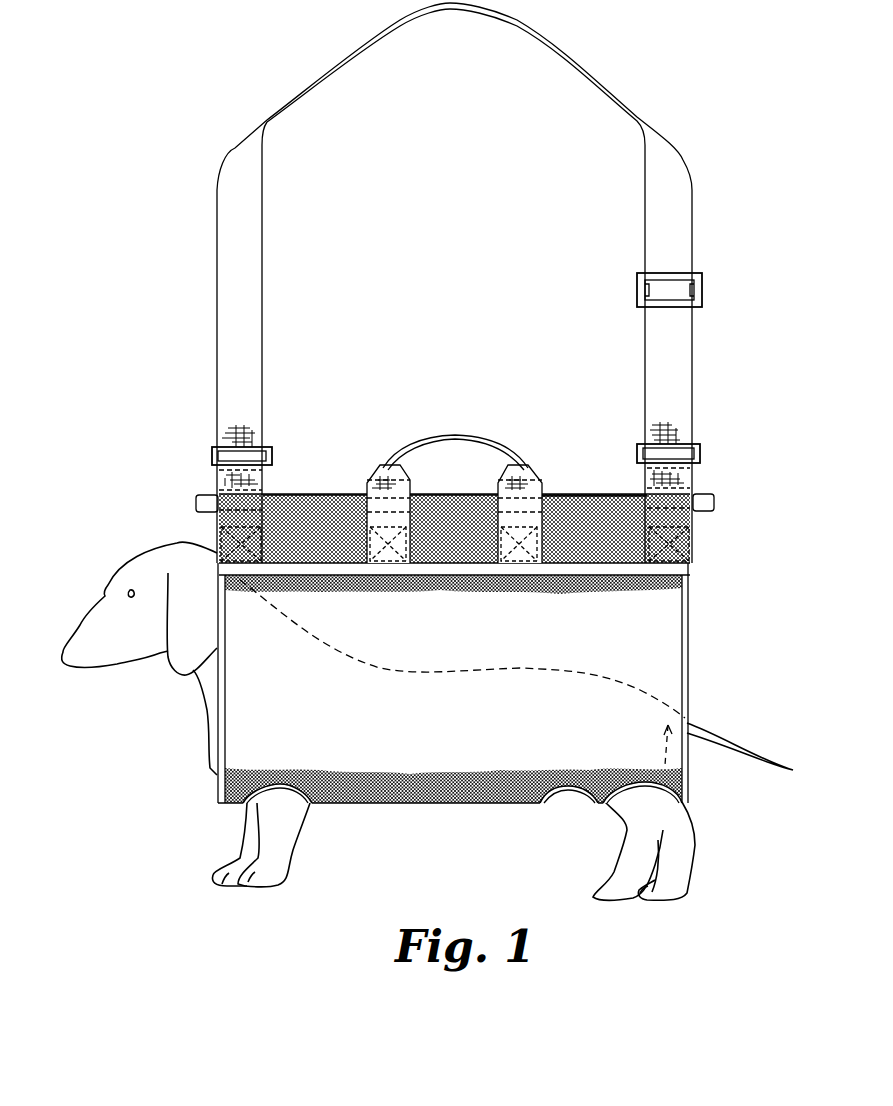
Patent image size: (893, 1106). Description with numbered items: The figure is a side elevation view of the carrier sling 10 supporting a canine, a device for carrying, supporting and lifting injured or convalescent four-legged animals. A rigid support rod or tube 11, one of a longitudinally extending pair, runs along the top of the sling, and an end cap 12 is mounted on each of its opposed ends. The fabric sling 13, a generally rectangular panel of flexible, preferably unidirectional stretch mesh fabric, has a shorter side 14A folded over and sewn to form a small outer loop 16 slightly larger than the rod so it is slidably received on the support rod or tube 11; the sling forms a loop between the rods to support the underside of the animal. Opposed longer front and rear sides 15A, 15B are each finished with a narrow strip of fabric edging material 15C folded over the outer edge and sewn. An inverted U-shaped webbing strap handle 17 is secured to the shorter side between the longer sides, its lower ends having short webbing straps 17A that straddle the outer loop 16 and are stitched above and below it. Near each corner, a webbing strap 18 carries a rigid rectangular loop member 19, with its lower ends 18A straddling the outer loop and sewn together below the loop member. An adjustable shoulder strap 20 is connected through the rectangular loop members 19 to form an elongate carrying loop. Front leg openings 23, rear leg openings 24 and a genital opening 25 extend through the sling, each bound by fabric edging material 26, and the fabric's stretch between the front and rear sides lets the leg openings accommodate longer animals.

The carrier sling 10 is at (666, 76).
The support rod or tube 11 is at (303, 494).
The end cap 12 is at (196, 500).
The fabric sling 13 is at (494, 653).
The shorter side 14A is at (585, 494).
The front longer side 15A is at (218, 710).
The rear longer side 15B is at (689, 672).
The fabric edging material 15C is at (218, 738).
The outer loop 16 is at (344, 494).
The webbing strap handle 17 is at (466, 437).
The short webbing strap 17A is at (383, 566).
The webbing strap 18 is at (225, 480).
The lower end of strap 18A is at (222, 542).
The rectangular loop member 19 is at (212, 448).
The shoulder strap 20 is at (266, 346).
The front leg opening 23 is at (290, 798).
The rear leg opening 24 is at (640, 802).
The genital opening 25 is at (556, 808).
The fabric edging material 26 is at (278, 770).